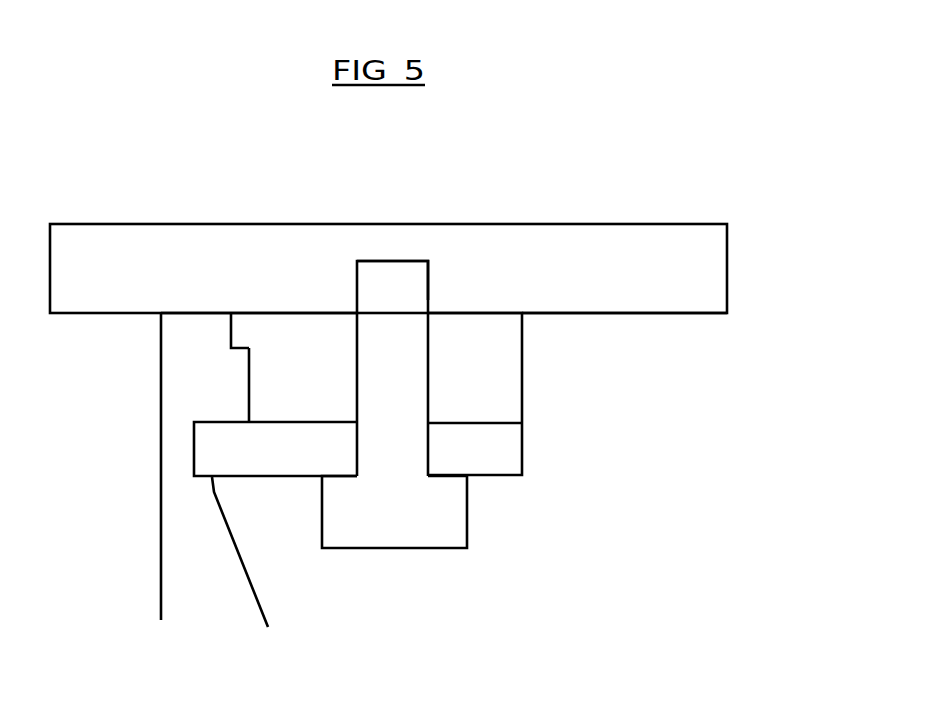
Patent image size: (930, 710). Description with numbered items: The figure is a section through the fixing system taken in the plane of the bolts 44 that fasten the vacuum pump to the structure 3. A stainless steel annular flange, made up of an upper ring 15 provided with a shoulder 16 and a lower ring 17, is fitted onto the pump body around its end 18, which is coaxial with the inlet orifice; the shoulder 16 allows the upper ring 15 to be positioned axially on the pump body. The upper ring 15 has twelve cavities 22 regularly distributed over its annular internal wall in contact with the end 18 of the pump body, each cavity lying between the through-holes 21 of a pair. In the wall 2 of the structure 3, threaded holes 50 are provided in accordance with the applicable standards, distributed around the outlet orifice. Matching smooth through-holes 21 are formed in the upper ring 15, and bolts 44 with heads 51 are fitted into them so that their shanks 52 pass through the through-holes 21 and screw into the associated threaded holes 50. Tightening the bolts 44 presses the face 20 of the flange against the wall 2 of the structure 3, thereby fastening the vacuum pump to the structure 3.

The wall 2 is at (645, 314).
The structure 3 is at (104, 247).
The upper ring 15 is at (262, 392).
The shoulder 16 is at (238, 332).
The lower ring 17 is at (284, 460).
The end 18 is at (172, 510).
The face 20 is at (495, 313).
The through-holes 21 is at (429, 408).
The cavities 22 is at (272, 356).
The bolts 44 is at (388, 556).
The threaded holes 50 is at (428, 280).
The heads 51 is at (437, 518).
The shanks 52 is at (379, 275).